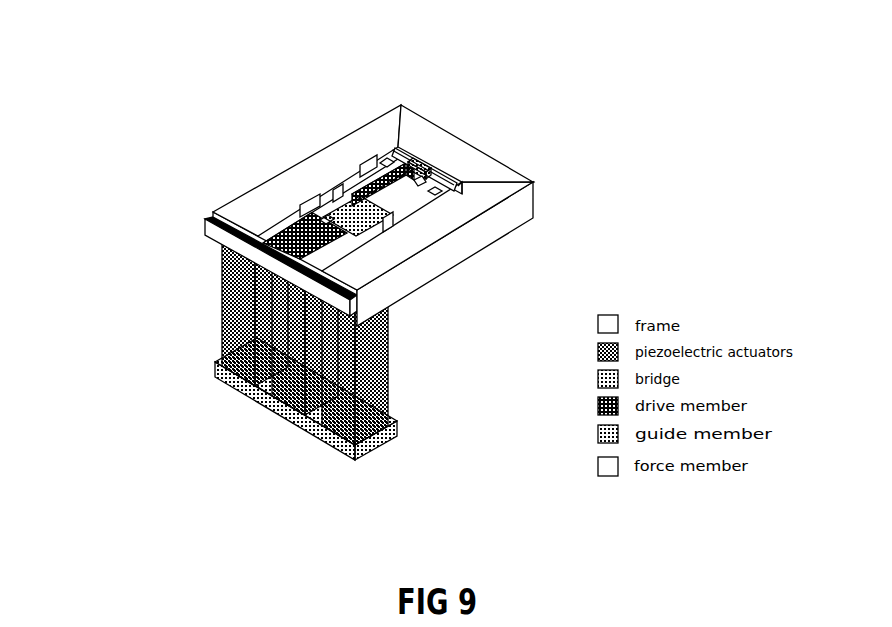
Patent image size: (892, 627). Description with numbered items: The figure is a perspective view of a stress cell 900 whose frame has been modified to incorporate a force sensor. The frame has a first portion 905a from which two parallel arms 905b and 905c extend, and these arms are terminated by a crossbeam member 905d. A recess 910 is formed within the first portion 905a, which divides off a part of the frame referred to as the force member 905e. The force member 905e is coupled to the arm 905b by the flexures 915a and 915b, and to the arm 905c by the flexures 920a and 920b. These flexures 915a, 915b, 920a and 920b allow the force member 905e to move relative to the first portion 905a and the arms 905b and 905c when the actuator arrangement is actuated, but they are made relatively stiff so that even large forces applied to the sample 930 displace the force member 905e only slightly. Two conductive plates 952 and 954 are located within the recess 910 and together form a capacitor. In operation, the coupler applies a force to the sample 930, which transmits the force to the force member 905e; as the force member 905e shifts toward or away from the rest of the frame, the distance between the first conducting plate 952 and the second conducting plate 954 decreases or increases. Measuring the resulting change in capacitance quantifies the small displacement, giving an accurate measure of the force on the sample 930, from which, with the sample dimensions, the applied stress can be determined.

The stress cell 900 is at (363, 234).
The first portion of the frame 905a is at (485, 168).
The arm 905b is at (275, 190).
The arm 905c is at (405, 245).
The crossbeam member 905d is at (257, 252).
The force member 905e is at (458, 184).
The recess 910 is at (408, 140).
The flexure 915a is at (373, 163).
The flexure 915b is at (388, 155).
The flexure 920a is at (423, 198).
The flexure 920b is at (422, 183).
The sample 930 is at (365, 158).
The first conducting plate 952 is at (417, 162).
The second conducting plate 954 is at (433, 168).